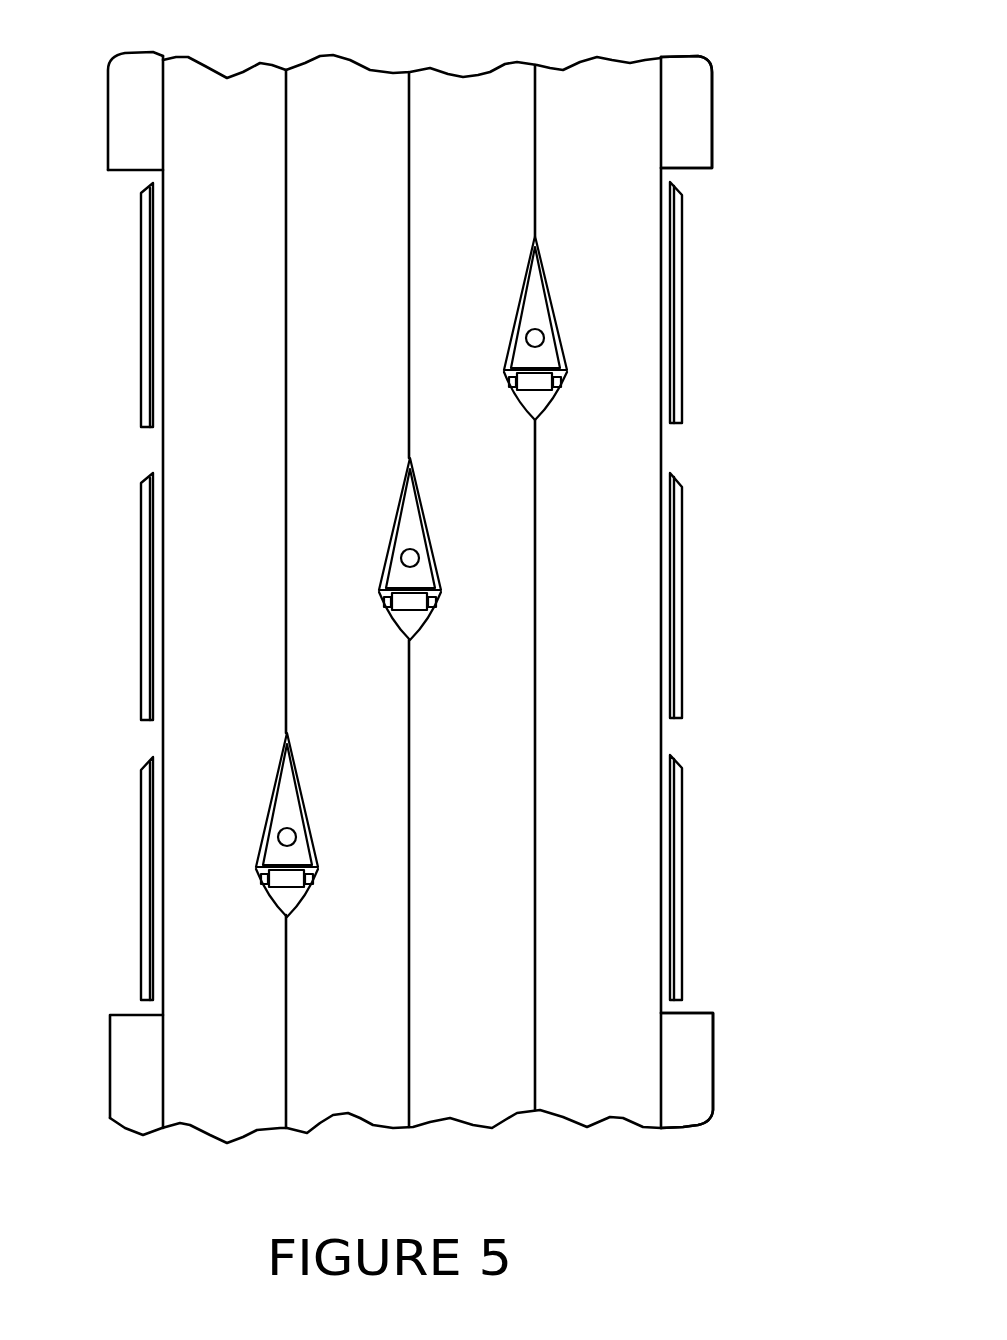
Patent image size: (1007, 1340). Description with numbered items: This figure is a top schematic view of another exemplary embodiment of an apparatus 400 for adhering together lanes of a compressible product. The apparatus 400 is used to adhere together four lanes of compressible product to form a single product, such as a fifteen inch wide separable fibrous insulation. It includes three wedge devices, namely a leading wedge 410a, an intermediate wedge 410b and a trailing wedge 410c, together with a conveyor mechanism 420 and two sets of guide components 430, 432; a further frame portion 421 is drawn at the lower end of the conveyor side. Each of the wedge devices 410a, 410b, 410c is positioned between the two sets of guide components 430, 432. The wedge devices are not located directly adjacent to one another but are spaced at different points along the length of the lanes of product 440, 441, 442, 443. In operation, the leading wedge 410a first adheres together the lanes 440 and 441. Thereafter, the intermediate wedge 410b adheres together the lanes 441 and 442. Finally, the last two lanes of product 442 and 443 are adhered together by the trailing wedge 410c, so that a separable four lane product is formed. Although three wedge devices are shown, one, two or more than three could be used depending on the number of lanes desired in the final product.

The apparatus 400 is at (102, 33).
The leading wedge 410a is at (532, 302).
The intermediate wedge 410b is at (410, 537).
The trailing wedge 410c is at (288, 798).
The conveyor mechanism 420 is at (713, 118).
The lower frame member 421 is at (693, 1010).
The guide components 430 is at (682, 285).
The guide components 432 is at (141, 287).
The lane of product 440 is at (627, 133).
The lane of product 441 is at (497, 133).
The lane of product 442 is at (372, 133).
The lane of product 443 is at (250, 133).